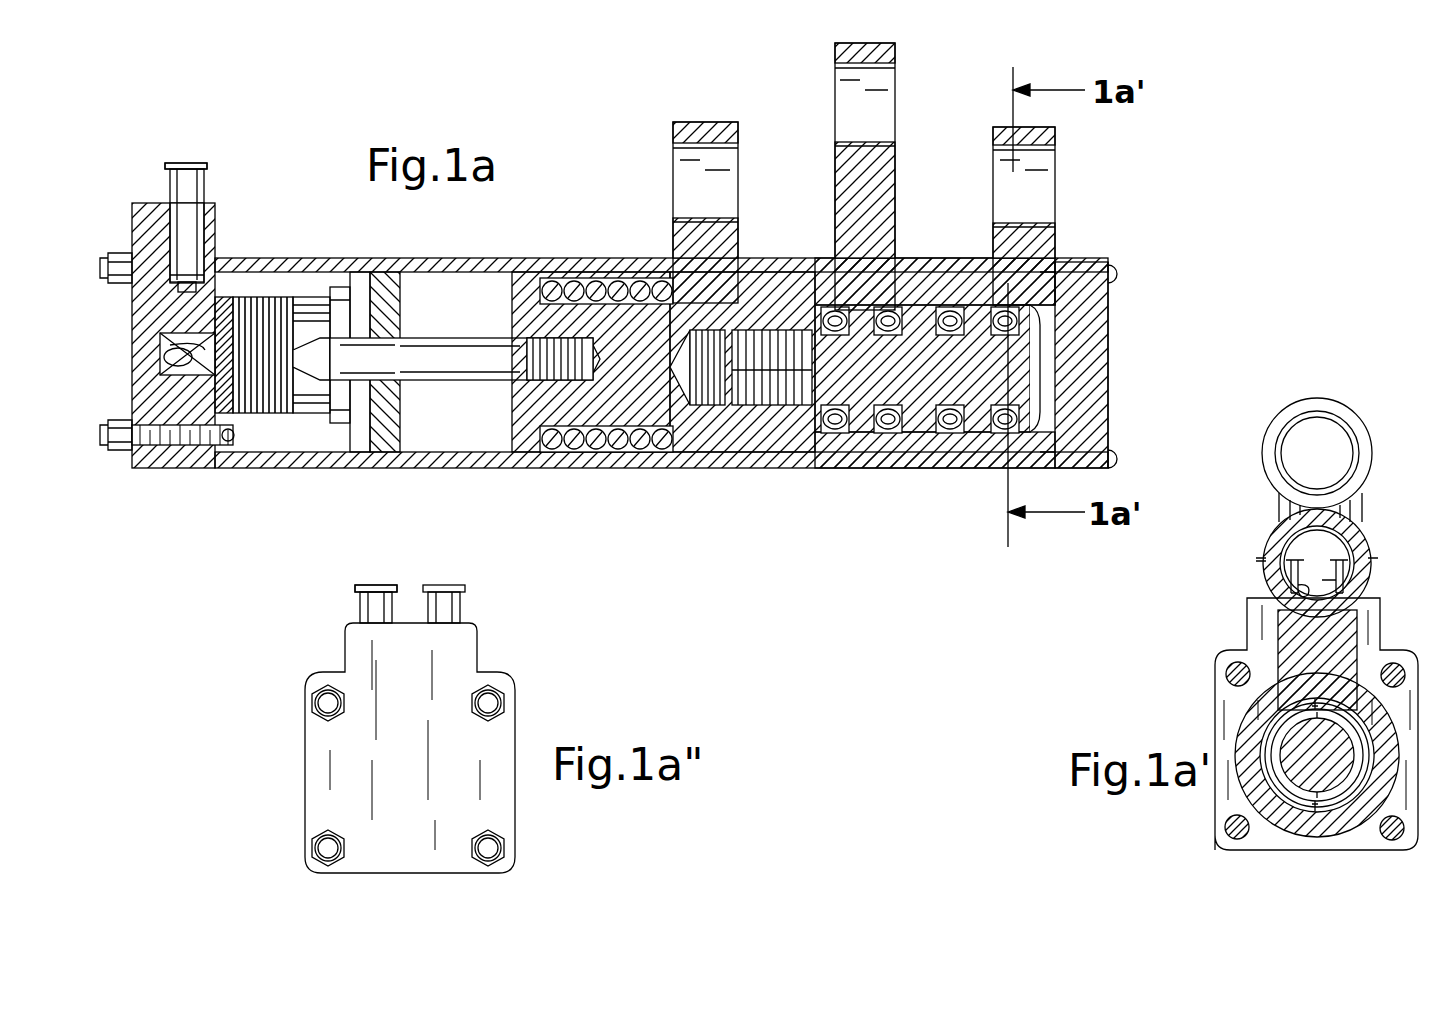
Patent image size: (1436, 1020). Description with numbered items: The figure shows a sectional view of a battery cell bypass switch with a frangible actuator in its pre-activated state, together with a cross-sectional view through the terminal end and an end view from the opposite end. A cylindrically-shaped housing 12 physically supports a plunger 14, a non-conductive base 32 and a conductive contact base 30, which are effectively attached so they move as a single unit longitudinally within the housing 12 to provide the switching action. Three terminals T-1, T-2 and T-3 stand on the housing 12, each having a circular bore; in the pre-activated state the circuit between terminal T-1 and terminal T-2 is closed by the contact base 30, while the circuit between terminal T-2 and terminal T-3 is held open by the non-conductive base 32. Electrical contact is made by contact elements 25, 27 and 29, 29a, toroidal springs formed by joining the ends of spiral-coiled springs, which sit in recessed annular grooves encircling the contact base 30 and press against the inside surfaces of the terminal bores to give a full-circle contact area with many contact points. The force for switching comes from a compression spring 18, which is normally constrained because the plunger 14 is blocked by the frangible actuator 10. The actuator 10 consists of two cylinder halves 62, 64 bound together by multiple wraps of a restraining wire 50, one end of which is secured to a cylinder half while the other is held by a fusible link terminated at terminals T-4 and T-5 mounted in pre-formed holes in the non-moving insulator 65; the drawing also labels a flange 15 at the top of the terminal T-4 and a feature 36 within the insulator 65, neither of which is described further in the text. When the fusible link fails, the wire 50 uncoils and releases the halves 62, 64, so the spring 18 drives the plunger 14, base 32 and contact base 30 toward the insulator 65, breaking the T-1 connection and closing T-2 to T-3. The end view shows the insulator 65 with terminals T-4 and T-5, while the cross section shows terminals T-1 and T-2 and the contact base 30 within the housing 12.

In FIG. 1A, the frangible actuator 10 is at (345, 290).
In FIG. 1A, the housing 12 is at (424, 258).
In FIG. 1A', the housing 12 is at (1300, 850).
In FIG. 1A, the plunger 14 is at (455, 362).
In FIG. 1A, the port flange 15 is at (197, 163).
The port flange 15 is at (392, 588).
In FIG. 1A', the port flange 15 is at (1258, 556).
In FIG. 1A, the compression spring 18 is at (600, 292).
In FIG. 1A, the contact element 25 is at (835, 432).
In FIG. 1A, the contact element 27 is at (882, 432).
In FIG. 1A, the contact element 29 is at (995, 432).
In FIG. 1A', the contact element 29 is at (1272, 765).
In FIG. 1A, the contact element 29a is at (920, 432).
In FIG. 1A, the contact base 30 is at (1027, 388).
In FIG. 1A', the contact base 30 is at (1298, 740).
In FIG. 1A, the non-conductive base 32 is at (621, 410).
In FIG. 1A, the passage 36 is at (180, 355).
In FIG. 1A, the restraining wire 50 is at (262, 413).
In FIG. 1A, the cylinder half 62 is at (310, 300).
In FIG. 1A, the cylinder half 64 is at (315, 403).
In FIG. 1A, the insulator 65 is at (154, 468).
The insulator 65 is at (305, 760).
In FIG. 1A, the terminal T-1 is at (1046, 137).
In FIG. 1A', the terminal T-1 is at (1275, 542).
In FIG. 1A, the terminal T-2 is at (871, 52).
In FIG. 1A', the terminal T-2 is at (1308, 402).
In FIG. 1A, the terminal T-3 is at (706, 122).
In FIG. 1A, the terminal T-4 is at (206, 190).
The terminal T-4 is at (360, 606).
In FIG. 1A', the terminal T-4 is at (1350, 572).
The terminal T-5 is at (460, 606).
In FIG. 1A', the terminal T-5 is at (1310, 578).